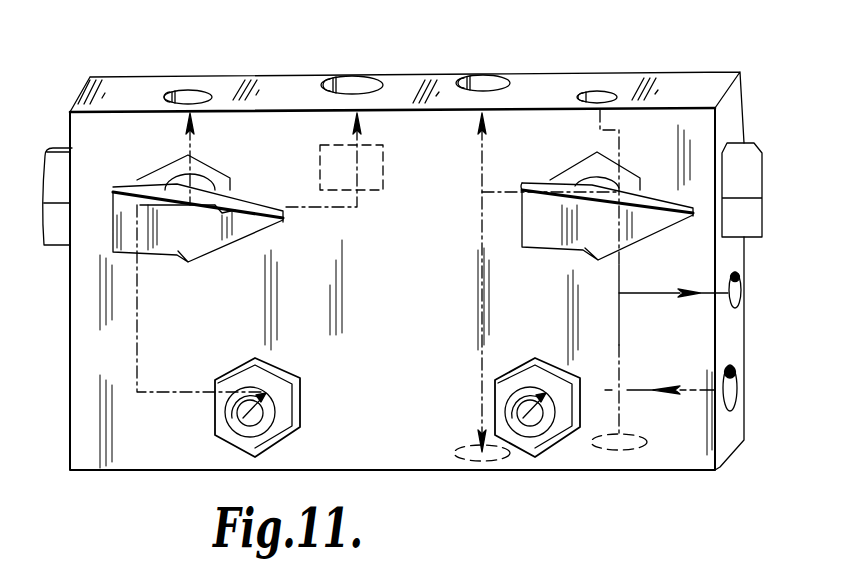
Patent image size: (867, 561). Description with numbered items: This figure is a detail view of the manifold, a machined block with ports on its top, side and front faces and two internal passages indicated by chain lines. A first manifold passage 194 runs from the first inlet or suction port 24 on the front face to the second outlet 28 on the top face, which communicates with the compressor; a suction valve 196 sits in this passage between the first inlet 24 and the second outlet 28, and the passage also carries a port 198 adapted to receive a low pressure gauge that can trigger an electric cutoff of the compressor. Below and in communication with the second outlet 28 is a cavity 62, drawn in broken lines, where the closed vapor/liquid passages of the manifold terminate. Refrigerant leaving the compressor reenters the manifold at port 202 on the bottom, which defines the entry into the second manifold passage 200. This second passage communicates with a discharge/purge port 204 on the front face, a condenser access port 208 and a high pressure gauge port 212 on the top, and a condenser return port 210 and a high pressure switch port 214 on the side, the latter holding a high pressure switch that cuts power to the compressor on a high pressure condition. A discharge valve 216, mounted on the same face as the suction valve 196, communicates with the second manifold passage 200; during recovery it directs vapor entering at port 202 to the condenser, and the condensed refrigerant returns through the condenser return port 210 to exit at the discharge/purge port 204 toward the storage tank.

The first inlet or suction port 24 is at (243, 420).
The second outlet 28 is at (352, 82).
The cavity 62 is at (320, 148).
The first manifold passage 194 is at (137, 318).
The suction valve 196 is at (172, 180).
The port 198 is at (190, 92).
The second manifold passage 200 is at (619, 343).
The port 202 is at (603, 462).
The discharge/purge port 204 is at (530, 413).
The condenser access port 208 is at (487, 80).
The condenser return port 210 is at (734, 382).
The high pressure gauge port 212 is at (602, 90).
The high pressure switch port 214 is at (742, 280).
The discharge valve 216 is at (643, 190).